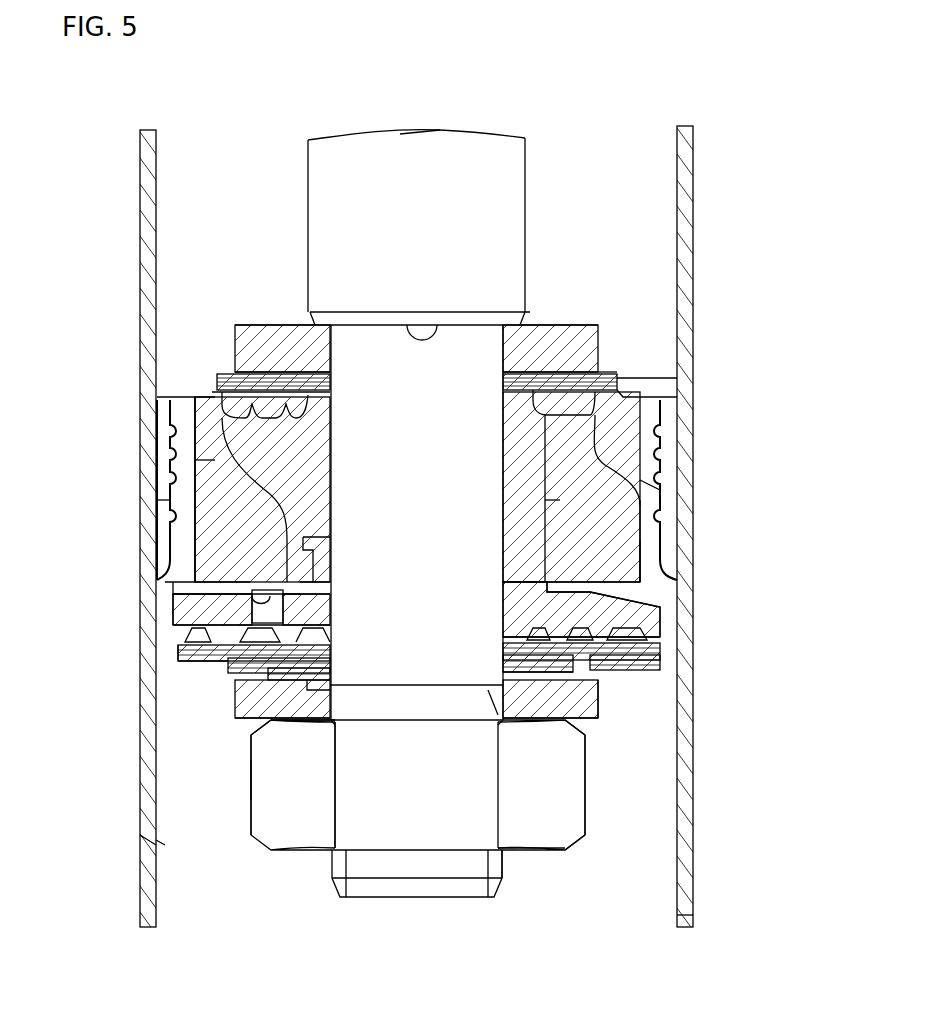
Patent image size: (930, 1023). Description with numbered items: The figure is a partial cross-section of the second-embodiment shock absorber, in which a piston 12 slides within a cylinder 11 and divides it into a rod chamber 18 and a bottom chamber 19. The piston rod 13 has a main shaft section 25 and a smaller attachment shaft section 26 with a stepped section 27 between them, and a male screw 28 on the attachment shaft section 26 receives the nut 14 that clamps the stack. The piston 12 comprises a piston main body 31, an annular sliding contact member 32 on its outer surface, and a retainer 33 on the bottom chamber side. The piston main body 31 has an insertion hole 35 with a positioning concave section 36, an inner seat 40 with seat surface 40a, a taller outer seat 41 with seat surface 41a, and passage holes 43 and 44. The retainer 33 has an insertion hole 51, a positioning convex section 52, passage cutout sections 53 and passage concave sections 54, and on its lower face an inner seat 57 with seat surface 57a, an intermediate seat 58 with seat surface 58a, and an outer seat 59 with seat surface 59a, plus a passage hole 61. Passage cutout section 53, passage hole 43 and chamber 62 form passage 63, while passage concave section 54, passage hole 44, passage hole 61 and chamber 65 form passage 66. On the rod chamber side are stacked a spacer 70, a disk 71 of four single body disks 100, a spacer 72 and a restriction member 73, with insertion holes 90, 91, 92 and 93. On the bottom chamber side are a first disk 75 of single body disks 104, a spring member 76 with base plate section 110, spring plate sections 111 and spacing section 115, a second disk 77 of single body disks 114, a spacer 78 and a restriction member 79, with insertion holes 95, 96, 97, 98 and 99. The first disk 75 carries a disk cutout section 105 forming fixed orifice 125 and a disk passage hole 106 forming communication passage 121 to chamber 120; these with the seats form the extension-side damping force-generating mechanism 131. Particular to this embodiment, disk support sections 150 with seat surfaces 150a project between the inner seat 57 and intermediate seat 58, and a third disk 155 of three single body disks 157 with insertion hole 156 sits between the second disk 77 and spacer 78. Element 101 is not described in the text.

The cylinder 11 is at (138, 147).
The piston 12 is at (215, 480).
The piston rod 13 is at (492, 133).
The nut 14 is at (284, 860).
The rod chamber 18 is at (630, 145).
The bottom chamber 19 is at (605, 920).
The main shaft section 25 is at (425, 148).
The attachment shaft section 26 is at (372, 898).
The stepped section 27 is at (443, 335).
The male screw 28 is at (503, 866).
The piston main body 31 is at (640, 432).
The sliding contact member 32 is at (562, 448).
The retainer 33 is at (580, 512).
The insertion hole 35 is at (172, 442).
The positioning concave section 36 is at (165, 502).
The inner seat 40 is at (312, 332).
The seat surface 40a is at (577, 340).
The outer seat 41 is at (250, 393).
The seat surface 41a is at (614, 372).
The passage hole 43 is at (600, 472).
The passage hole 44 is at (200, 430).
The insertion hole 51 is at (615, 492).
The positioning convex section 52 is at (300, 545).
The passage cutout section 53 is at (600, 543).
The passage concave section 54 is at (255, 600).
The inner seat 57 is at (545, 565).
The seat surface 57a is at (493, 704).
The intermediate seat 58 is at (620, 612).
The seat surface 58a is at (520, 668).
The outer seat 59 is at (600, 632).
The seat surface 59a is at (540, 662).
The passage hole 61 is at (240, 610).
The chamber 62 is at (568, 400).
The passage 63 is at (600, 410).
The chamber 65 is at (150, 842).
The passage 66 is at (220, 462).
The spacer 70 is at (215, 412).
The disk 71 is at (230, 400).
The spacer 72 is at (270, 380).
The restriction member 73 is at (292, 352).
The first disk 75 is at (197, 663).
The spring member 76 is at (300, 676).
The second disk 77 is at (323, 680).
The spacer 78 is at (280, 835).
The restriction member 79 is at (252, 835).
The insertion hole 90 is at (342, 372).
The insertion hole 91 is at (353, 382).
The insertion hole 92 is at (367, 390).
The insertion hole 93 is at (382, 395).
The insertion hole 95 is at (458, 720).
The insertion hole 96 is at (466, 720).
The insertion hole 97 is at (473, 720).
The insertion hole 98 is at (483, 716).
The insertion hole 99 is at (488, 710).
The single body disk 100 is at (630, 364).
The flange lip 101 is at (626, 380).
The single body disk 104 is at (560, 647).
The disk cutout section 105 is at (222, 660).
The disk passage hole 106 is at (250, 647).
The base plate section 110 is at (333, 840).
The spring plate section 111 is at (230, 665).
The single body disk 114 is at (508, 686).
The spacing section 115 is at (277, 672).
The chamber 120 is at (253, 668).
The communication passage 121 is at (262, 630).
The fixed orifice 125 is at (185, 652).
The damping force-generating mechanism 131 is at (178, 665).
The disk support section 150 is at (652, 598).
The seat surface 150a is at (503, 692).
The third disk 155 is at (212, 845).
The insertion hole 156 is at (478, 720).
The single body disk 157 is at (498, 698).